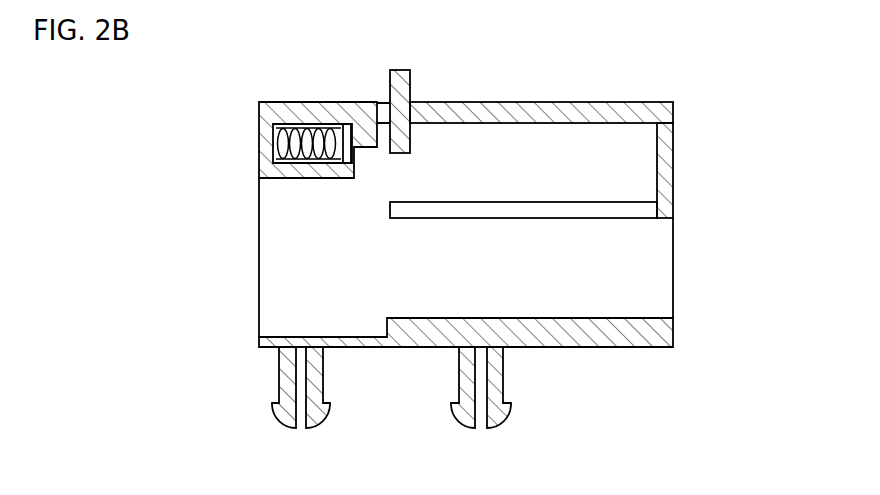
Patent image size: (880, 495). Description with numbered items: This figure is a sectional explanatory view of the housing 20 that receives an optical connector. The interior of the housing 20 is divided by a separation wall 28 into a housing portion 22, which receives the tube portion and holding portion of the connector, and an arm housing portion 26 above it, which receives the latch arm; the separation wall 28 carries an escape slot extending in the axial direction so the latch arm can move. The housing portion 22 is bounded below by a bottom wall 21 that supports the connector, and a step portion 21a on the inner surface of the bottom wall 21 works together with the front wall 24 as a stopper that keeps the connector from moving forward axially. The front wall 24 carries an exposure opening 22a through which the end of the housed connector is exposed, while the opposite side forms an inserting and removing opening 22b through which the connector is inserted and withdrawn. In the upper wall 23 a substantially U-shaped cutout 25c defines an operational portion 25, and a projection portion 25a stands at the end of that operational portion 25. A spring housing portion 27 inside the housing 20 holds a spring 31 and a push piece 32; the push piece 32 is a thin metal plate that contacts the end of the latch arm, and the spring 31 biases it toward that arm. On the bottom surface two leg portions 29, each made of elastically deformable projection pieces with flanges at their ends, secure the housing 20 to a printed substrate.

The housing 20 is at (678, 94).
The bottom wall 21 is at (468, 325).
The step portion 21a is at (387, 330).
The housing portion 22 is at (475, 307).
The exposure opening 22a is at (673, 261).
The inserting and removing opening 22b is at (259, 221).
The upper wall 23 is at (293, 110).
The front wall 24 is at (665, 152).
The operational portion 25 is at (538, 102).
The projection portion 25a is at (411, 72).
The cutout 25c is at (385, 112).
The arm housing portion 26 is at (613, 143).
The spring housing portion 27 is at (270, 173).
The separation wall 28 is at (617, 212).
The leg portions 29 is at (452, 405).
The spring 31 is at (270, 137).
The push piece 32 is at (343, 127).